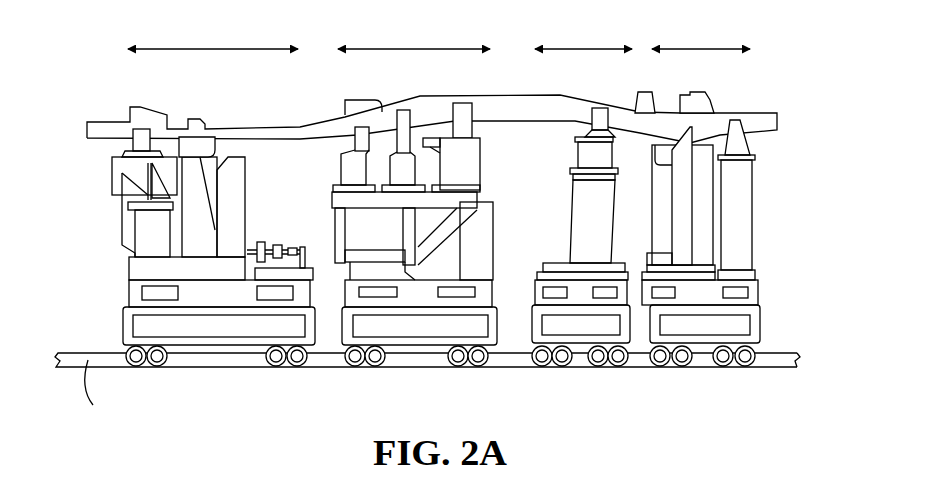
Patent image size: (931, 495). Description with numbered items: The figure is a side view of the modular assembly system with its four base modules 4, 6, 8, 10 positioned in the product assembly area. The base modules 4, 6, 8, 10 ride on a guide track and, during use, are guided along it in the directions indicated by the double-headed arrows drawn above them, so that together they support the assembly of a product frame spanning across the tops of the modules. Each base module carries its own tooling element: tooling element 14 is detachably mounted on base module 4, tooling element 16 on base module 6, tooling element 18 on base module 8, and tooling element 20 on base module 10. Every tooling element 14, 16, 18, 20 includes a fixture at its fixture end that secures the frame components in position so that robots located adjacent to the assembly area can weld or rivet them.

The base module 4 is at (221, 328).
The base module 6 is at (417, 328).
The base module 8 is at (585, 328).
The base module 10 is at (707, 328).
The tooling element 14 is at (98, 238).
The tooling element 16 is at (320, 173).
The tooling element 18 is at (555, 191).
The tooling element 20 is at (768, 232).